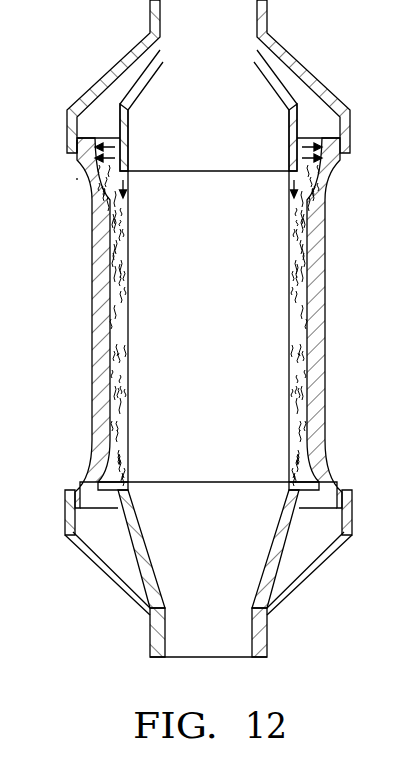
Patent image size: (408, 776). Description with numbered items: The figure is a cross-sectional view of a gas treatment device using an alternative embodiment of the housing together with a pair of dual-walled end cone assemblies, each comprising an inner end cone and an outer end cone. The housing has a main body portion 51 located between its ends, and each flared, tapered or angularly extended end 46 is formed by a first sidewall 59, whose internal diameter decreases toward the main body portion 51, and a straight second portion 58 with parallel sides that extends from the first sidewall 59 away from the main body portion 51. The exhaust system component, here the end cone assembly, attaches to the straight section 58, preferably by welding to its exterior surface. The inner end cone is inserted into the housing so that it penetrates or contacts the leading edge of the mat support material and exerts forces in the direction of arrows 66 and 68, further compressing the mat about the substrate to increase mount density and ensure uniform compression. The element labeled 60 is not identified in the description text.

The end 46 is at (354, 461).
The main body portion 51 is at (87, 215).
The second portion 58 is at (56, 140).
The first sidewall 59 is at (71, 178).
The housing wall 60 is at (324, 292).
The arrow 66 is at (125, 172).
The arrow 68 is at (115, 138).